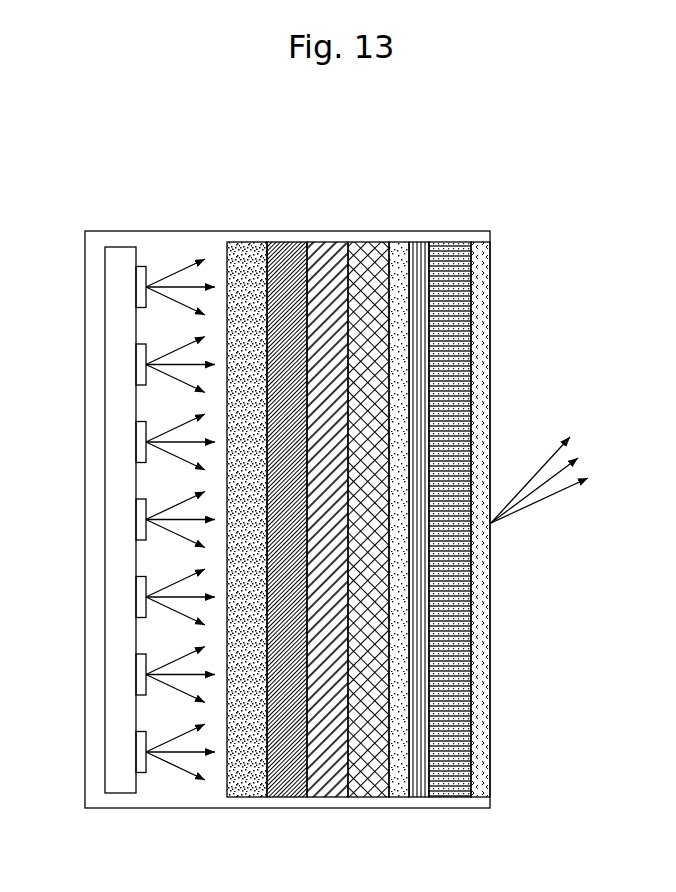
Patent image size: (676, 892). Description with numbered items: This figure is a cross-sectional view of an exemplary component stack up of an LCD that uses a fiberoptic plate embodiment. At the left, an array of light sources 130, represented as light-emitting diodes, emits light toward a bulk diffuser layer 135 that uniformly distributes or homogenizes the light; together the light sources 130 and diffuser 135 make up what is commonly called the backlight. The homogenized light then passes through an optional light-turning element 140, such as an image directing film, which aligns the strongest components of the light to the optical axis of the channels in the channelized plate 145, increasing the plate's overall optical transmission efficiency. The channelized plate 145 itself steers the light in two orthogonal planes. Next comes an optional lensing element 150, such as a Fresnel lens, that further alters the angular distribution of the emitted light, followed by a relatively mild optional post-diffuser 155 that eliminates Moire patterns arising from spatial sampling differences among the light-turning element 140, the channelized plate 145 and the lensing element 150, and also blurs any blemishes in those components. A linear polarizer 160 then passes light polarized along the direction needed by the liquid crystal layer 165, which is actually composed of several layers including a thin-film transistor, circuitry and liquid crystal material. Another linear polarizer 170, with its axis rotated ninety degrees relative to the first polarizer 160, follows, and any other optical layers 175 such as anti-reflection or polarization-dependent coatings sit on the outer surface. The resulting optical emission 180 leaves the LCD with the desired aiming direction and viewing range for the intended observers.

The light sources 130 is at (141, 282).
The bulk diffuser layer 135 is at (245, 277).
The light-turning element 140 is at (285, 277).
The channelized plate 145 is at (327, 277).
The lensing element 150 is at (368, 277).
The post-diffuser 155 is at (400, 277).
The linear polarizer 160 is at (422, 277).
The liquid crystal layer 165 is at (453, 277).
The linear polarizer 170 is at (483, 277).
The optical layers 175 is at (491, 410).
The optical emission 180 is at (564, 473).